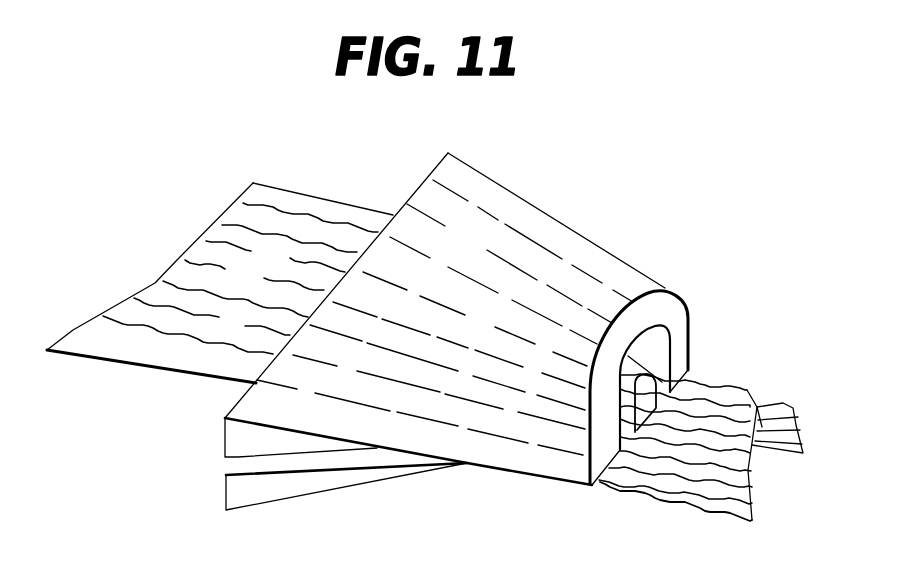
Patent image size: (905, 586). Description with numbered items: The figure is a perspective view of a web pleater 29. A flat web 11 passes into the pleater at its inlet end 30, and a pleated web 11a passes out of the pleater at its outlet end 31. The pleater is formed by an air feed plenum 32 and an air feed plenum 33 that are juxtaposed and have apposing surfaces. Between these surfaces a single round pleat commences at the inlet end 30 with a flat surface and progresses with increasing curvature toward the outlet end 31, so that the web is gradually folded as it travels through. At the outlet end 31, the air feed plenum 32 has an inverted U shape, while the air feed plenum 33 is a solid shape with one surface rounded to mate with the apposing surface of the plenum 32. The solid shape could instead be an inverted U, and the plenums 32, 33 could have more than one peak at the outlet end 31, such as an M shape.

The flat web 11 is at (256, 285).
The pleated web 11a is at (747, 390).
The web pleater 29 is at (614, 221).
The inlet end 30 is at (225, 468).
The outlet end 31 is at (648, 348).
The air feed plenum 32 is at (465, 259).
The air feed plenum 33 is at (280, 490).